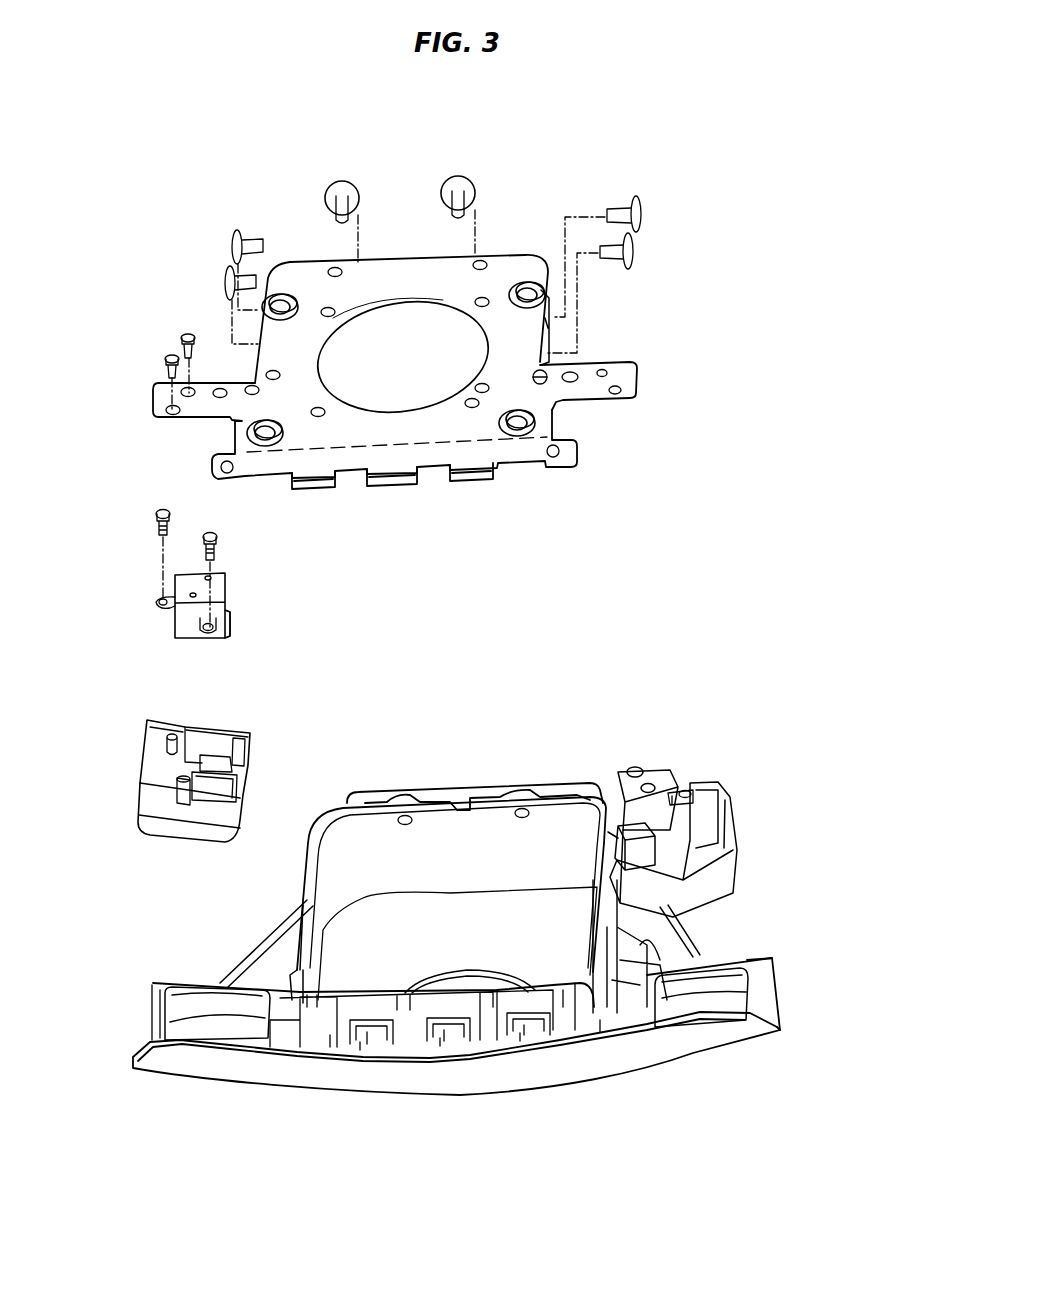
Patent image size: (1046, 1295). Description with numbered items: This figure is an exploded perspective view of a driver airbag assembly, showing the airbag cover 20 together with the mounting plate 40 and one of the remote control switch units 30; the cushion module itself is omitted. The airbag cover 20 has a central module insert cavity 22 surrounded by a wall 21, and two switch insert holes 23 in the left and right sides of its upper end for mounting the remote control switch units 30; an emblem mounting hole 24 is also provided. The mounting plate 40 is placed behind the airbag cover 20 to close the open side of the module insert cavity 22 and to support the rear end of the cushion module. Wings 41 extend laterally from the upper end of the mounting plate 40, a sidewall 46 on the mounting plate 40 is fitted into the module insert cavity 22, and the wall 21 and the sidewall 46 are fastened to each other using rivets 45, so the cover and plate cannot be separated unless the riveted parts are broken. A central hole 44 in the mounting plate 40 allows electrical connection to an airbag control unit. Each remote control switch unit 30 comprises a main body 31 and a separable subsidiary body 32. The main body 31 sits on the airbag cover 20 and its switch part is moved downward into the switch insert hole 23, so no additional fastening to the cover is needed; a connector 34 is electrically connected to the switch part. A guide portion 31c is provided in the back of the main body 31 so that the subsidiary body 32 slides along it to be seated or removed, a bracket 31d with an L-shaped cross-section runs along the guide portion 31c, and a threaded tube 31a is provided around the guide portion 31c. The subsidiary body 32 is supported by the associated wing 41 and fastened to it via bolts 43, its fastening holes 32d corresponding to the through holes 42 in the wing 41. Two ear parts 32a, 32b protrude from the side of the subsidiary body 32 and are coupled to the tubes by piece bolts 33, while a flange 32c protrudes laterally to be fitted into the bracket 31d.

The airbag cover 20 is at (508, 937).
The wall 21 is at (488, 926).
The module insert cavity 22 is at (668, 803).
The switch insert holes 23 is at (213, 1002).
The emblem mounting hole 24 is at (470, 982).
The remote control switch unit 30 is at (436, 734).
The main body 31 is at (186, 775).
The tube 31a is at (160, 746).
The guide portion 31c is at (213, 742).
The bracket 31d is at (250, 742).
The subsidiary body 32 is at (172, 619).
The ear part 32a is at (155, 601).
The ear part 32b is at (205, 628).
The flange 32c is at (228, 616).
The fastening holes 32d is at (196, 595).
The piece bolts 33 is at (205, 547).
The connector 34 is at (213, 786).
The mounting plate 40 is at (412, 315).
The wings 41 is at (625, 380).
The through holes 42 is at (158, 402).
The bolts 43 is at (168, 352).
The central hole 44 is at (400, 383).
The rivets 45 is at (462, 178).
The sidewall 46 is at (545, 330).